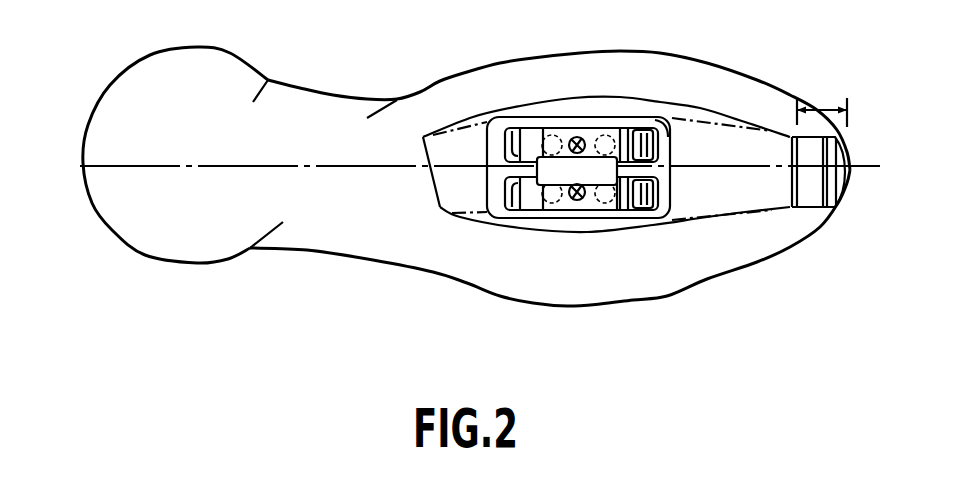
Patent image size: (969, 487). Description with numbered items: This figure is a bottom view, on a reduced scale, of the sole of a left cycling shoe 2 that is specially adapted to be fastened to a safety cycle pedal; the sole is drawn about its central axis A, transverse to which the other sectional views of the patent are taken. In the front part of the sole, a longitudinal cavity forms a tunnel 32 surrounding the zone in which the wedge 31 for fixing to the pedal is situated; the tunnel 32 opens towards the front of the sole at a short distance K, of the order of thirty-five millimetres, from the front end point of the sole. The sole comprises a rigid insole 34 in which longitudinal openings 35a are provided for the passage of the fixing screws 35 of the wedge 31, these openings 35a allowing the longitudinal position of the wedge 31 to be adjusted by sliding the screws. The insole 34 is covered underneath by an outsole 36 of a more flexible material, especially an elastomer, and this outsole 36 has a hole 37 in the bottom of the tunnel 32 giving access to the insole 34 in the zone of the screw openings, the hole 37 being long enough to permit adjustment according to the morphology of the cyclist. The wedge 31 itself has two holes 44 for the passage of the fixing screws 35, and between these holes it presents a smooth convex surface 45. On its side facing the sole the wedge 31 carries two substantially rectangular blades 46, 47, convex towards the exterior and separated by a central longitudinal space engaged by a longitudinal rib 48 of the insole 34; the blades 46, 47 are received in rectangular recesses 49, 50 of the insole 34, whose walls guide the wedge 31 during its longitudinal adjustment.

The cycling shoe 2 is at (331, 260).
The central axis A is at (136, 170).
The wedge 31 is at (597, 211).
The tunnel 32 is at (755, 138).
The rigid insole 34 is at (650, 210).
The fixing screws 35 is at (572, 232).
The longitudinal openings 35a is at (537, 120).
The outsole 36 is at (768, 240).
The hole 37 is at (658, 122).
The holes 44 is at (583, 137).
The smooth convex surface 45 is at (556, 148).
The blade 46 is at (618, 138).
The blade 47 is at (615, 212).
The longitudinal rib 48 is at (672, 145).
The rectangular recess 49 is at (503, 136).
The rectangular recess 50 is at (516, 223).
The distance K is at (822, 97).